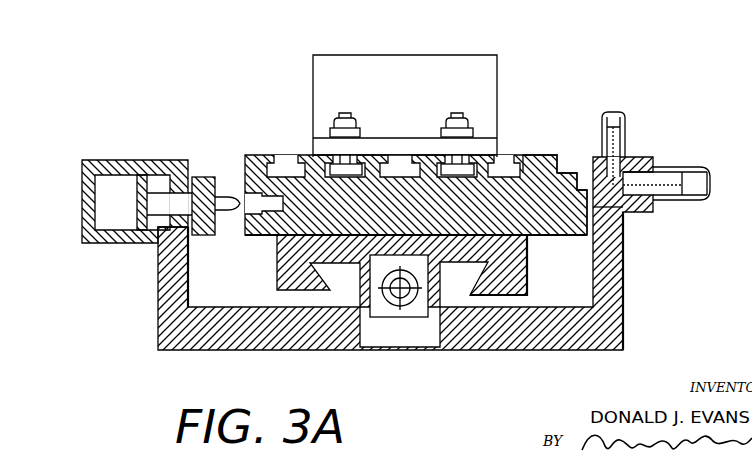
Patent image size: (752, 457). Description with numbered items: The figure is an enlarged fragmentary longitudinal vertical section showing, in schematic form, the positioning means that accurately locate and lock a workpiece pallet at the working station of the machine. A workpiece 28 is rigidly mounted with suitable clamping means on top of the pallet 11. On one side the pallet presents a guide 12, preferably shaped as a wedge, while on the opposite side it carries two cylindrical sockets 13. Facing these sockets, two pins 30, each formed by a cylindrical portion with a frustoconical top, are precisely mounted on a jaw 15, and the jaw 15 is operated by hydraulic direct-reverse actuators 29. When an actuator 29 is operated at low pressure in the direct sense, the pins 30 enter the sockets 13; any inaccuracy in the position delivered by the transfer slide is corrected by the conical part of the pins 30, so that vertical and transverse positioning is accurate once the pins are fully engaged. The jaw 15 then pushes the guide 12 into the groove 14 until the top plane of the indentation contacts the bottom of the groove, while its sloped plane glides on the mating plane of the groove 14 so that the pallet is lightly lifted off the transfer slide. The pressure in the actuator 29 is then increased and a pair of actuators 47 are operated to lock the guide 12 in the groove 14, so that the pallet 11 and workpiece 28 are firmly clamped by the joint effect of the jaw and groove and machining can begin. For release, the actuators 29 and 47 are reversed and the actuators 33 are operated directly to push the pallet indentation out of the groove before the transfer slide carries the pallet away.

The pallet 11 is at (543, 156).
The guide 12 is at (578, 173).
The cylindrical sockets 13 is at (247, 202).
The groove 14 is at (627, 223).
The jaw 15 is at (204, 176).
The workpiece 28 is at (420, 56).
The hydraulic direct-reverse actuators 29 is at (104, 160).
The pins 30 is at (232, 192).
The actuators 33 is at (710, 167).
The actuators 47 is at (623, 113).